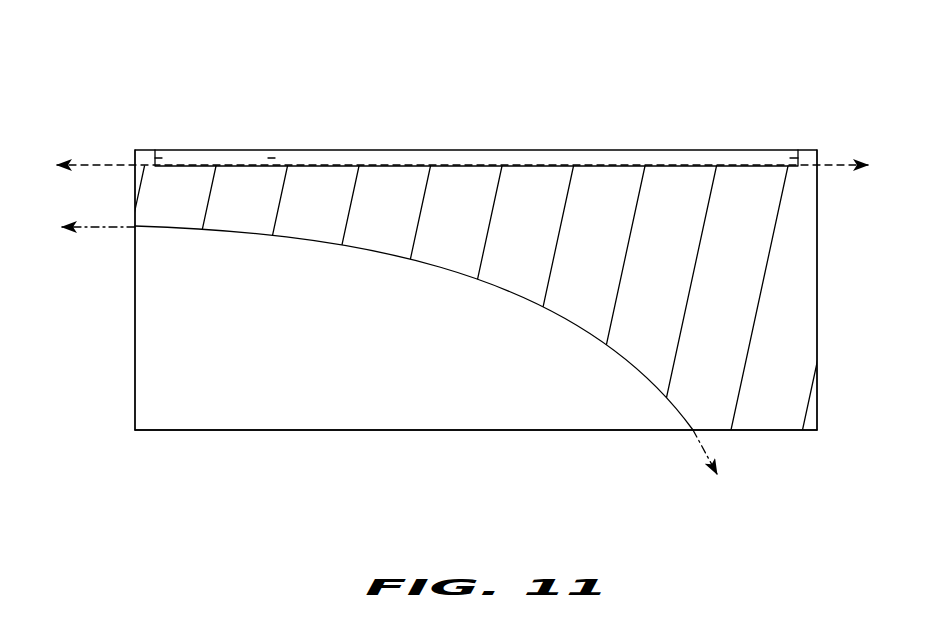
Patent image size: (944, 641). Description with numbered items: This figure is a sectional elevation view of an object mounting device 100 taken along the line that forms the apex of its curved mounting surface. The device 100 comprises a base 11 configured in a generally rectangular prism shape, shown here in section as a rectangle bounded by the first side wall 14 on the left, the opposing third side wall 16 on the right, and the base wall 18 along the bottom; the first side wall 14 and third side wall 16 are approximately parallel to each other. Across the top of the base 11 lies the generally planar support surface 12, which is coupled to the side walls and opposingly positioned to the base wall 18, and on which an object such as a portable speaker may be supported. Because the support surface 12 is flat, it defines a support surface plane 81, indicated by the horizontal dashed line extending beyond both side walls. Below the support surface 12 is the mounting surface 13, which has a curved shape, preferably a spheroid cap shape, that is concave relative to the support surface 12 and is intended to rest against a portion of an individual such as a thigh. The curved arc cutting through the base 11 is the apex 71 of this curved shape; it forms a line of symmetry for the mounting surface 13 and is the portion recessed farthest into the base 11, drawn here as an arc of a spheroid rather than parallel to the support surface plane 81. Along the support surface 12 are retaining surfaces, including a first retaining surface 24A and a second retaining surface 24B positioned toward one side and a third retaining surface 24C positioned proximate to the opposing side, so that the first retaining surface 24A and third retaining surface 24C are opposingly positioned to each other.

The object mounting device 100 is at (559, 84).
The base 11 is at (587, 223).
The support surface 12 is at (398, 161).
The mounting surface 13 is at (276, 386).
The first side wall 14 is at (135, 352).
The third side wall 16 is at (817, 298).
The base wall 18 is at (535, 431).
The first retaining surface 24A is at (160, 157).
The second retaining surface 24B is at (272, 157).
The third retaining surface 24C is at (795, 157).
The apex 71 is at (97, 230).
The support surface plane 81 is at (113, 164).